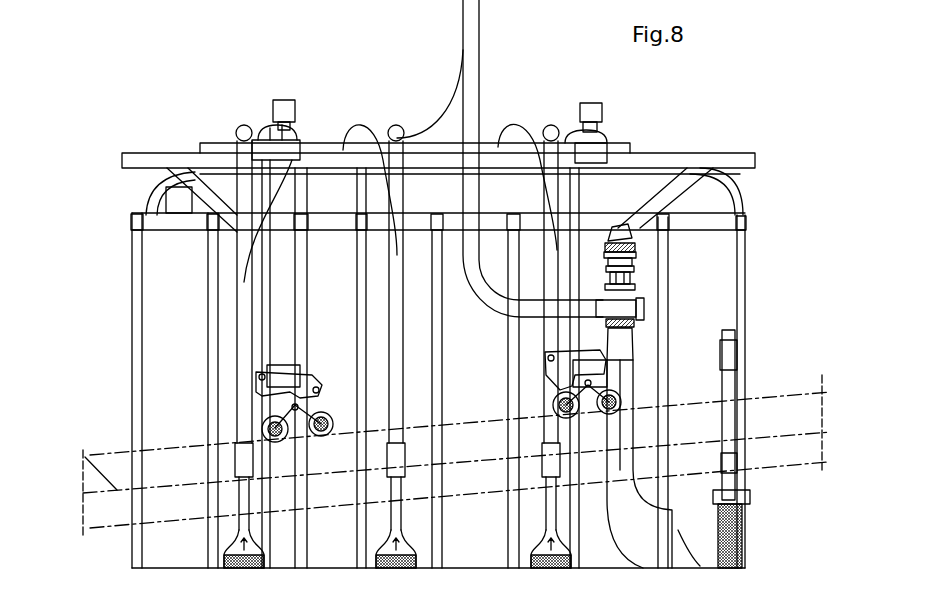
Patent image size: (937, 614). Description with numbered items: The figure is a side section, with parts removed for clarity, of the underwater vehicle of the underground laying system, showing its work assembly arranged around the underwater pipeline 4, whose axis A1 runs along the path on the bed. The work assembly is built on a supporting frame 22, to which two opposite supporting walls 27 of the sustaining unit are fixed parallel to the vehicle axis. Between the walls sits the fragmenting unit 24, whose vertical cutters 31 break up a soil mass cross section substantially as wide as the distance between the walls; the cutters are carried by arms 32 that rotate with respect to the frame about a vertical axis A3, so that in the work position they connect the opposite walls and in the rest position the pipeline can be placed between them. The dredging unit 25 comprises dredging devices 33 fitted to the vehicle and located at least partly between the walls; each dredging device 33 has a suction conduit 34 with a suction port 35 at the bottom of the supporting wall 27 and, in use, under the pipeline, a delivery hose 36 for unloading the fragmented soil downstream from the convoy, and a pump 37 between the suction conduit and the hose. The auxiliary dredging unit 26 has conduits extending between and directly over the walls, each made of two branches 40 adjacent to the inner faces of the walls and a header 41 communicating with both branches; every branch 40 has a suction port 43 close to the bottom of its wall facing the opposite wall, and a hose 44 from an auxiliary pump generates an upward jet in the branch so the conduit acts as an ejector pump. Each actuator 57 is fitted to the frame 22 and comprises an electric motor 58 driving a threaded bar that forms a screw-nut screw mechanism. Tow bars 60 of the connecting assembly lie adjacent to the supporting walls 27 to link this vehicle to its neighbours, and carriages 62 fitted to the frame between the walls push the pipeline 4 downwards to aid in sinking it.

The underwater pipeline 4 is at (116, 455).
The axis of the pipeline A1 is at (88, 470).
The vertical axis A3 is at (748, 484).
The supporting frame 22 is at (142, 275).
The fragmenting unit 24 is at (755, 555).
The dredging unit 25 is at (500, 100).
The auxiliary dredging unit 26 is at (198, 120).
The supporting wall 27 is at (128, 325).
The vertical cutter 31 is at (742, 537).
The arm 32 is at (738, 500).
The dredging device 33 is at (648, 317).
The suction conduit 34 is at (652, 560).
The suction port 35 is at (698, 568).
The delivery hose 36 is at (480, 100).
The pump 37 is at (642, 314).
The branch 40 is at (237, 350).
The header 41 is at (242, 124).
The suction port 43 is at (247, 570).
The hose 44 is at (370, 190).
The actuator 57 is at (310, 125).
The electric motor 58 is at (290, 102).
The tow bar 60 is at (740, 157).
The carriage 62 is at (340, 408).